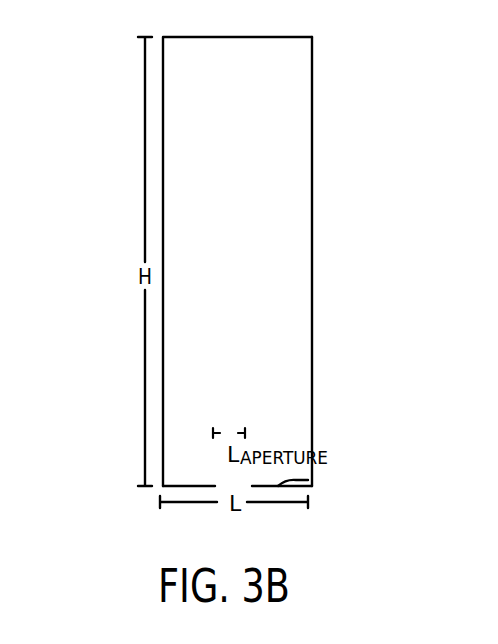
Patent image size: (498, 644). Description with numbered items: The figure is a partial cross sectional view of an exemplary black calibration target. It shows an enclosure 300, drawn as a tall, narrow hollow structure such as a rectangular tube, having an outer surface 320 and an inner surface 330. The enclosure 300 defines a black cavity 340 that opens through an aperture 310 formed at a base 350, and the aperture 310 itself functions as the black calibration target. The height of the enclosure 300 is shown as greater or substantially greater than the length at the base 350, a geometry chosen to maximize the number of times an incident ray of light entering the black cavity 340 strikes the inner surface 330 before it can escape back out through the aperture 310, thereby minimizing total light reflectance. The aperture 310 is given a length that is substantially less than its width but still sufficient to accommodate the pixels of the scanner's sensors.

The enclosure 300 is at (82, 81).
The aperture 310 is at (232, 481).
The outer surface 320 is at (312, 115).
The inner surface 330 is at (238, 37).
The black cavity 340 is at (292, 302).
The base 350 is at (212, 492).